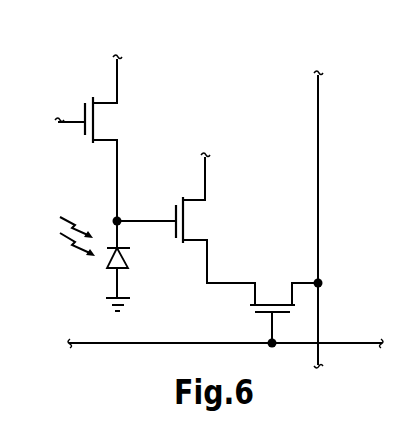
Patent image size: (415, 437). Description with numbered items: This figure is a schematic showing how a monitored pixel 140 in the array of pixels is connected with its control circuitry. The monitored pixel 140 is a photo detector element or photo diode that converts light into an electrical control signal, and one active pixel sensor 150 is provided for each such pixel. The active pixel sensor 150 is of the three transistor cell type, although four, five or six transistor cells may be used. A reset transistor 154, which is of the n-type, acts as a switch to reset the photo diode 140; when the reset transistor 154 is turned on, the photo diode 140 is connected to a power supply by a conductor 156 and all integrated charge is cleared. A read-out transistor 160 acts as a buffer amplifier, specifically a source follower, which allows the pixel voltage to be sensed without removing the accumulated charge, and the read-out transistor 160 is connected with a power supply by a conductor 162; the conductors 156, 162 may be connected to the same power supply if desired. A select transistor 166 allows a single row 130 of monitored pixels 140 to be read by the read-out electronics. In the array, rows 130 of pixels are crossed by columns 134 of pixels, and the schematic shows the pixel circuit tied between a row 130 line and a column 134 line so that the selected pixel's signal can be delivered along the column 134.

The row 130 is at (148, 343).
The column 134 is at (318, 200).
The monitored pixel 140 is at (98, 270).
The active pixel sensor 150 is at (323, 112).
The reset transistor 154 is at (87, 130).
The conductor 156 is at (116, 77).
The read-out transistor 160 is at (200, 222).
The conductor 162 is at (205, 173).
The select transistor 166 is at (267, 287).